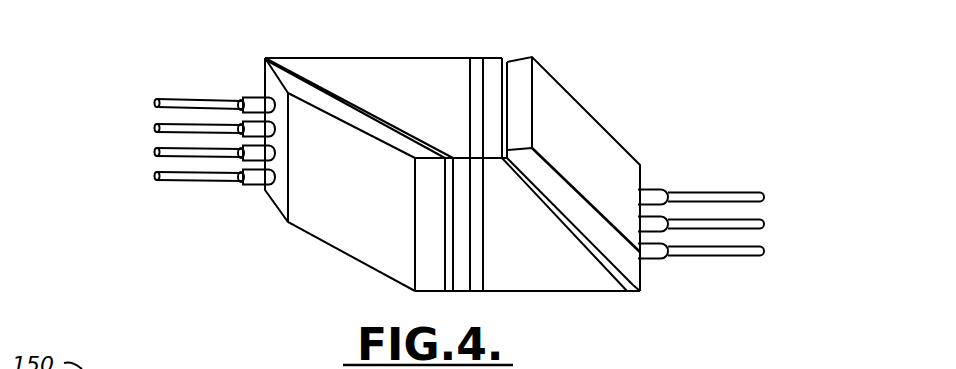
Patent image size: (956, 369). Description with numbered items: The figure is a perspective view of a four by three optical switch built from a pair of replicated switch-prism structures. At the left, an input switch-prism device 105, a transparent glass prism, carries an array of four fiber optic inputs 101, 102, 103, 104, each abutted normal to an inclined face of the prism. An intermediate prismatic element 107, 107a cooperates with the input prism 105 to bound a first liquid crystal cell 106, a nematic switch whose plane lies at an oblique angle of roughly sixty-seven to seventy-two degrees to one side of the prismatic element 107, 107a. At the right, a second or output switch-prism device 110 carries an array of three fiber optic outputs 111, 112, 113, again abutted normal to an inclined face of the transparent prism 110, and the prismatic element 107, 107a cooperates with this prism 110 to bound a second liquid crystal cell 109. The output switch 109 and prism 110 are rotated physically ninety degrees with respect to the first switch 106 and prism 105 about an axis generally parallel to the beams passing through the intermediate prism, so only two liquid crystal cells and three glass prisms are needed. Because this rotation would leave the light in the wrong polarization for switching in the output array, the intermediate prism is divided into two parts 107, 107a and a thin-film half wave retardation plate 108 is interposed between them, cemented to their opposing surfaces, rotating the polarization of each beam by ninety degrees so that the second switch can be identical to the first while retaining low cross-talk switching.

The fiber optic input 101 is at (202, 101).
The fiber optic input 102 is at (158, 128).
The fiber optic input 103 is at (157, 152).
The fiber optic input 104 is at (188, 184).
The input switch-prism device 105 is at (322, 233).
The first liquid crystal cell 106 is at (302, 73).
The prismatic element part 107 is at (418, 68).
The prismatic element part 107a is at (547, 280).
The half wave retardation plate 108 is at (467, 289).
The second liquid crystal cell 109 is at (640, 272).
The output switch-prism device 110 is at (568, 103).
The fiber optic output 111 is at (715, 194).
The fiber optic output 112 is at (767, 223).
The fiber optic output 113 is at (740, 258).